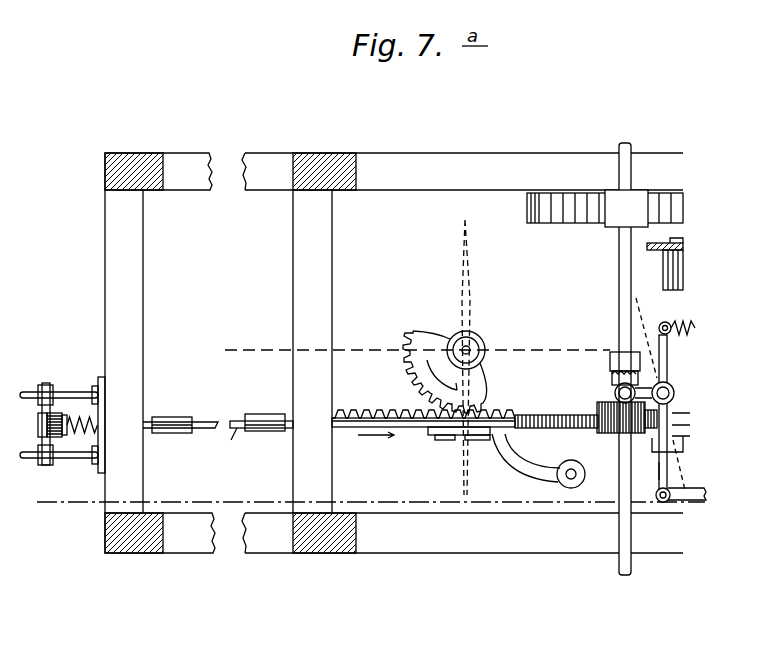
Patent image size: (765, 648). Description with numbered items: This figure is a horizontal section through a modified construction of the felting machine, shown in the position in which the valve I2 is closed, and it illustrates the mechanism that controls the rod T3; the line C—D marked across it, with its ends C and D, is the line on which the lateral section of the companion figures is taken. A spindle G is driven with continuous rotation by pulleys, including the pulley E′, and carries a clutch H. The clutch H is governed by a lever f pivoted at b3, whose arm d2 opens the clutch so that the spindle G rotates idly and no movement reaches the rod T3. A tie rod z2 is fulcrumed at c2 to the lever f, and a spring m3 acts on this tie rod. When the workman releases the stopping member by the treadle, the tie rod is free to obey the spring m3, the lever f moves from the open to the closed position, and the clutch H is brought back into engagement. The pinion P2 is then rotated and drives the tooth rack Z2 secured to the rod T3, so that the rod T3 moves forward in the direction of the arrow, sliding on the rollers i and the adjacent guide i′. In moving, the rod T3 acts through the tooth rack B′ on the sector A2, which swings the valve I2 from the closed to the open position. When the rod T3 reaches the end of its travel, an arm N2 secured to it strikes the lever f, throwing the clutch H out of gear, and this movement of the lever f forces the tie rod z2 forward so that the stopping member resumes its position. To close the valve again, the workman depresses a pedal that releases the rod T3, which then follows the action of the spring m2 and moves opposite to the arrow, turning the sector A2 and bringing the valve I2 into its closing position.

The spring m2 is at (80, 420).
The rollers i is at (173, 419).
The stop plate i′ is at (268, 432).
The rod T3 is at (216, 428).
The section line C—D C is at (362, 498).
The tooth rack B′ is at (385, 397).
The sector A2 is at (430, 337).
The valve I2 is at (470, 290).
The tooth rack Z2 is at (527, 415).
The arm N2 is at (585, 452).
The pinion P2 is at (610, 438).
The clutch H is at (610, 361).
The arm of lever d2 is at (614, 393).
The pivot of lever b3 is at (674, 388).
The spindle G is at (618, 285).
The pulley E′ is at (605, 208).
The spring m3 is at (691, 331).
The lever f is at (659, 470).
The tie rod z2 is at (688, 488).
The fulcrum c2 is at (655, 497).
The section line C— D is at (706, 500).